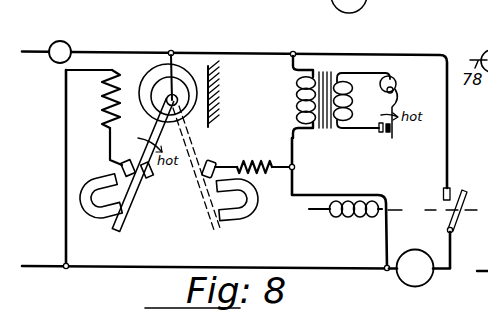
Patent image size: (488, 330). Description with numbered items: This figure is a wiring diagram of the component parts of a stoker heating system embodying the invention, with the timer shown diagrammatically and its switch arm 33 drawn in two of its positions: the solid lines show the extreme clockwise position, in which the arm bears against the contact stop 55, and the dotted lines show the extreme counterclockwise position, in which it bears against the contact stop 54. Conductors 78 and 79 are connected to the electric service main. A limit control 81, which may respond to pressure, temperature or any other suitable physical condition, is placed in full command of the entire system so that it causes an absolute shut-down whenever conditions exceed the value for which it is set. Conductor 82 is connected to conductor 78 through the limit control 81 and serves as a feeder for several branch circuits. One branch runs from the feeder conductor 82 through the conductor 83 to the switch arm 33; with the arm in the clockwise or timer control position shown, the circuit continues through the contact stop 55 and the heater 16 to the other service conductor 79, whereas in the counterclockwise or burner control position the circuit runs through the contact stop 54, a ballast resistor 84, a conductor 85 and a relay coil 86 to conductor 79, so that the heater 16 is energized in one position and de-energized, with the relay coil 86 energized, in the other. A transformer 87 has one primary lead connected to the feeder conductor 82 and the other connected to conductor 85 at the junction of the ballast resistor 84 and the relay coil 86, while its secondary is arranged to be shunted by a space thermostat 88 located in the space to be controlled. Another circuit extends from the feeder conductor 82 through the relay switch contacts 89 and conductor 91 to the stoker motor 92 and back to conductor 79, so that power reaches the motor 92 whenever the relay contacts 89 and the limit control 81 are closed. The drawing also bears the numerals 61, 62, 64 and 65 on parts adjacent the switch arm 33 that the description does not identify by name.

The heater 16 is at (104, 103).
The switch arm 33 is at (125, 224).
The contact stop 54 is at (212, 162).
The contact stop 55 is at (118, 167).
The movable contact 61 is at (151, 181).
The fixed contact 62 is at (129, 161).
The magnet 64 is at (238, 219).
The magnet 65 is at (100, 218).
The conductor 78 is at (43, 48).
The conductor 79 is at (53, 259).
The limit control 81 is at (67, 47).
The conductor 82 is at (135, 52).
The conductor 83 is at (179, 65).
The ballast resistor 84 is at (264, 175).
The conductor 85 is at (297, 176).
The relay coil 86 is at (358, 200).
The transformer 87 is at (330, 71).
The space thermostat 88 is at (398, 87).
The relay switch contacts 89 is at (456, 189).
The conductor 91 is at (453, 252).
The motor 92 is at (420, 277).